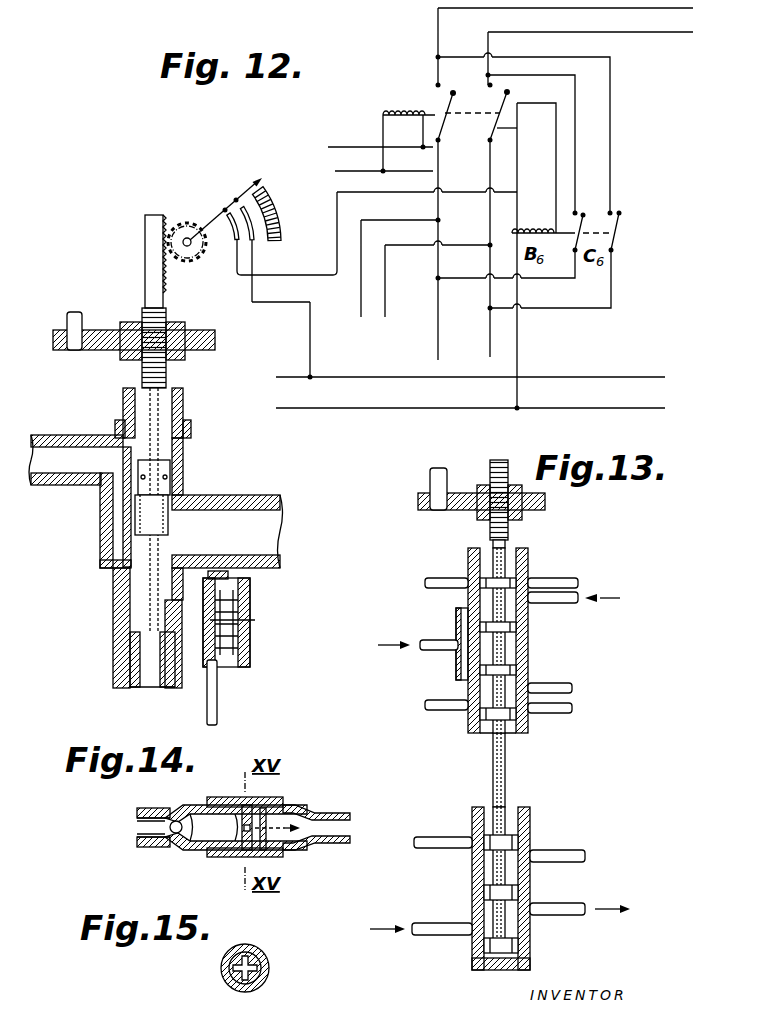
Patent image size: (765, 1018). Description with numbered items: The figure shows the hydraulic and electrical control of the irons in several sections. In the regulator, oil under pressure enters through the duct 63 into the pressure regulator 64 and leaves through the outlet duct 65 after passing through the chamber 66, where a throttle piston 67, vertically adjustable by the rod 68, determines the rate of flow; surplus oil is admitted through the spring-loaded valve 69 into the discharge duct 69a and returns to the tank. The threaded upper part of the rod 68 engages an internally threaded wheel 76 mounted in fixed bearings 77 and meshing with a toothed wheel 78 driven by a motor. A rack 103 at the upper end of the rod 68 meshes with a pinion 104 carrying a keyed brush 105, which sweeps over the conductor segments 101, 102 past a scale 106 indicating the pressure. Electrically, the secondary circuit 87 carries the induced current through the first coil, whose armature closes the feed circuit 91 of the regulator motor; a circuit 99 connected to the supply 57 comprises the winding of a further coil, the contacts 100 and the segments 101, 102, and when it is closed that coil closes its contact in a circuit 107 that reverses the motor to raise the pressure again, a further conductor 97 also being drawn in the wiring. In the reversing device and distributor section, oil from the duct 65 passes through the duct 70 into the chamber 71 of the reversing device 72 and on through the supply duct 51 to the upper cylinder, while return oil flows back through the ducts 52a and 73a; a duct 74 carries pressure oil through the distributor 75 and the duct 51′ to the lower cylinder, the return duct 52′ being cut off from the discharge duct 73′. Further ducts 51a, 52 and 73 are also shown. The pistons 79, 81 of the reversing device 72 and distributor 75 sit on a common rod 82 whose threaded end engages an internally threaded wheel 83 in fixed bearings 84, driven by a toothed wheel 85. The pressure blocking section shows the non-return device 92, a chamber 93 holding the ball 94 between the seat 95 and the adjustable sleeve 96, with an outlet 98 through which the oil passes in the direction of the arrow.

In FIG. 12, the supply 57 is at (612, 407).
In FIG. 12, the duct 63 is at (70, 470).
In FIG. 12, the pressure regulator 64 is at (97, 557).
In FIG. 12, the outlet duct 65 is at (258, 518).
In FIG. 13, the outlet duct 65 is at (437, 650).
In FIG. 12, the chamber 66 is at (175, 490).
In FIG. 12, the throttle piston 67 is at (140, 520).
In FIG. 12, the rod 68 is at (166, 386).
In FIG. 12, the spring-loaded valve 69 is at (198, 652).
In FIG. 12, the discharge duct 69a is at (218, 716).
In FIG. 12, the internally threaded wheel 76 is at (215, 345).
In FIG. 12, the fixed bearings 77 is at (130, 322).
In FIG. 12, the toothed wheel 78 is at (60, 352).
In FIG. 12, the secondary circuit 87 is at (350, 160).
In FIG. 12, the feed circuit 91 is at (628, 9).
In FIG. 12, the conductor 97 is at (398, 222).
In FIG. 12, the circuit 99 is at (520, 172).
In FIG. 12, the contacts 100 is at (499, 125).
In FIG. 12, the conductor segment 101 is at (232, 243).
In FIG. 12, the conductor segment 102 is at (255, 240).
In FIG. 12, the rack 103 is at (163, 215).
In FIG. 12, the pinion 104 is at (195, 224).
In FIG. 12, the brush 105 is at (233, 205).
In FIG. 12, the scale 106 is at (270, 199).
In FIG. 12, the circuit 107 is at (575, 152).
In FIG. 13, the oil supply duct 51 is at (572, 604).
In FIG. 13, the pipe 51a is at (560, 690).
In FIG. 13, the oil supply duct 51′ is at (575, 905).
In FIG. 14, the oil supply duct 51′ is at (148, 847).
In FIG. 13, the pipe 52 is at (566, 582).
In FIG. 13, the duct 52a is at (560, 712).
In FIG. 13, the return duct 52′ is at (565, 852).
In FIG. 13, the duct 70 is at (456, 628).
In FIG. 13, the chamber 71 is at (485, 600).
In FIG. 13, the reversing device 72 is at (534, 655).
In FIG. 13, the pipe 73 is at (450, 580).
In FIG. 13, the duct 73a is at (445, 712).
In FIG. 13, the discharge duct 73′ is at (428, 838).
In FIG. 13, the duct 74 is at (445, 936).
In FIG. 13, the distributor 75 is at (466, 893).
In FIG. 13, the piston 79 is at (515, 628).
In FIG. 13, the piston 81 is at (516, 946).
In FIG. 13, the common rod 82 is at (510, 546).
In FIG. 13, the internally threaded wheel 83 is at (545, 500).
In FIG. 13, the fixed bearings 84 is at (478, 488).
In FIG. 13, the toothed wheel 85 is at (418, 505).
In FIG. 14, the non-return device 92 is at (200, 800).
In FIG. 15, the non-return device 92 is at (268, 960).
In FIG. 14, the chamber 93 is at (210, 836).
In FIG. 14, the ball 94 is at (170, 828).
In FIG. 14, the seat 95 is at (137, 822).
In FIG. 14, the sleeve 96 is at (258, 805).
In FIG. 15, the sleeve 96 is at (232, 976).
In FIG. 14, the outlet 98 is at (280, 856).